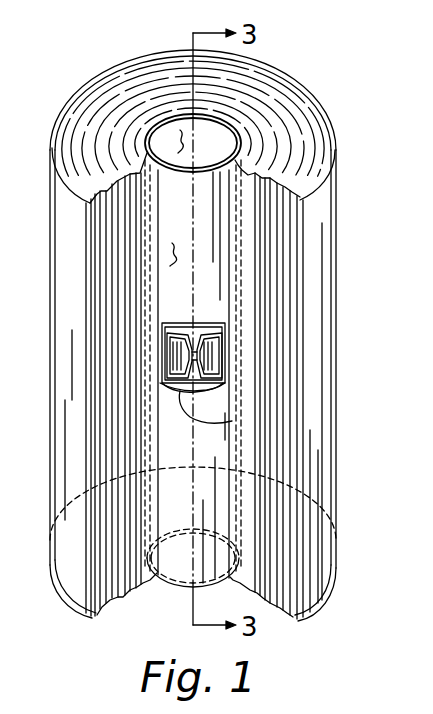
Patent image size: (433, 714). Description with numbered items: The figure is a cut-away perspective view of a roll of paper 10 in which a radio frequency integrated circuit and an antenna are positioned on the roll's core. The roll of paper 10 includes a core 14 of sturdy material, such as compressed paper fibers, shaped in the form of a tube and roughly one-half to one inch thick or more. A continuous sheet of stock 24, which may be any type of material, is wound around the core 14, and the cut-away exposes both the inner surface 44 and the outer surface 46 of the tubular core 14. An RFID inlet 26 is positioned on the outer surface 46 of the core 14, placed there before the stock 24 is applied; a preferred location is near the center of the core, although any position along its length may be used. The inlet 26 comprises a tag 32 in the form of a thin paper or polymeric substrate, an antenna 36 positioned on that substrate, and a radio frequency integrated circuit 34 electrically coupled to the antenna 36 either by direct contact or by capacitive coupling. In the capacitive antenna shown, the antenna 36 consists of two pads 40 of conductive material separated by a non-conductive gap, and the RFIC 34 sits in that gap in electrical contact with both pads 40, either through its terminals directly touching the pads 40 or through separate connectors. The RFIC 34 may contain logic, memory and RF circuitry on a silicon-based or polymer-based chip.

The roll of paper 10 is at (328, 80).
The core 14 is at (173, 158).
The stock 24 is at (110, 383).
The RFID inlet 26 is at (212, 306).
The tag 32 is at (232, 421).
The radio frequency integrated circuit 34 is at (223, 398).
The antenna 36 is at (161, 357).
The pads 40 is at (176, 323).
The inner surface 44 is at (180, 137).
The outer surface 46 is at (172, 253).